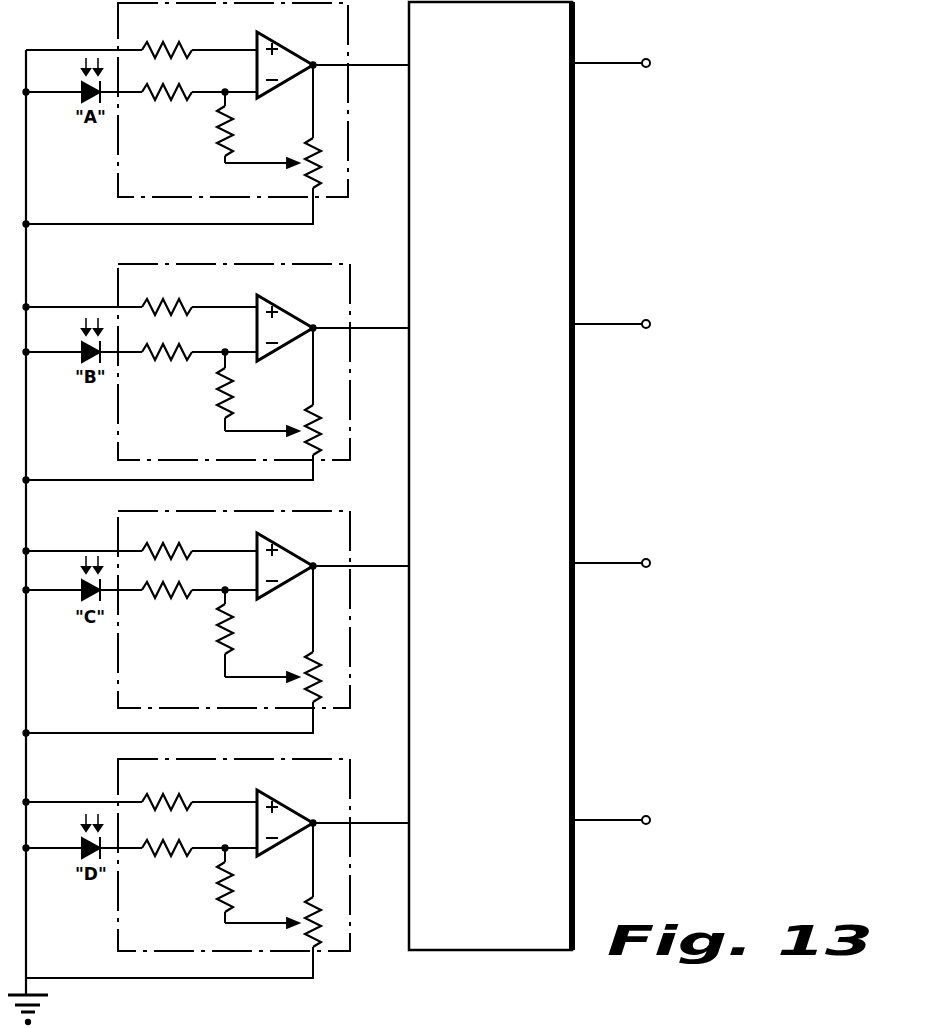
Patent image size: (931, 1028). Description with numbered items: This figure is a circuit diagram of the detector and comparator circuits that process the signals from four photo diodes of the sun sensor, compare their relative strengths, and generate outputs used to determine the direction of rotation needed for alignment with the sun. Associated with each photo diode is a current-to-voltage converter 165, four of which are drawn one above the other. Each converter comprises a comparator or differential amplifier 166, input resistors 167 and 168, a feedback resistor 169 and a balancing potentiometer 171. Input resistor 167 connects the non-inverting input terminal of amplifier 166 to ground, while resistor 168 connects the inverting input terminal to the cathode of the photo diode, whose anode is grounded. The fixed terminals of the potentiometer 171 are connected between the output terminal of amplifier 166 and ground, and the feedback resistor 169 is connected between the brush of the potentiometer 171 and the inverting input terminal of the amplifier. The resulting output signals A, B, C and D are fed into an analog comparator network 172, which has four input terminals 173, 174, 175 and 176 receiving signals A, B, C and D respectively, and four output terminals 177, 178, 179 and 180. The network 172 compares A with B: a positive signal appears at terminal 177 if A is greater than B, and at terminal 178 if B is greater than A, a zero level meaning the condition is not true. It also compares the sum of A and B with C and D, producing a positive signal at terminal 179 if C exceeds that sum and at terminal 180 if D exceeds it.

The current-to-voltage converter 165 is at (177, 189).
The differential amplifier 166 is at (295, 46).
The input resistor 167 is at (152, 42).
The input resistor 168 is at (173, 97).
The feedback resistor 169 is at (218, 141).
The balancing potentiometer 171 is at (301, 152).
The analog comparator network 172 is at (472, 551).
The input terminal 173 is at (376, 81).
The input terminal 174 is at (377, 344).
The input terminal 175 is at (377, 582).
The input terminal 176 is at (377, 839).
The output terminal 177 is at (602, 66).
The output terminal 178 is at (601, 327).
The output terminal 179 is at (601, 566).
The output terminal 180 is at (604, 823).